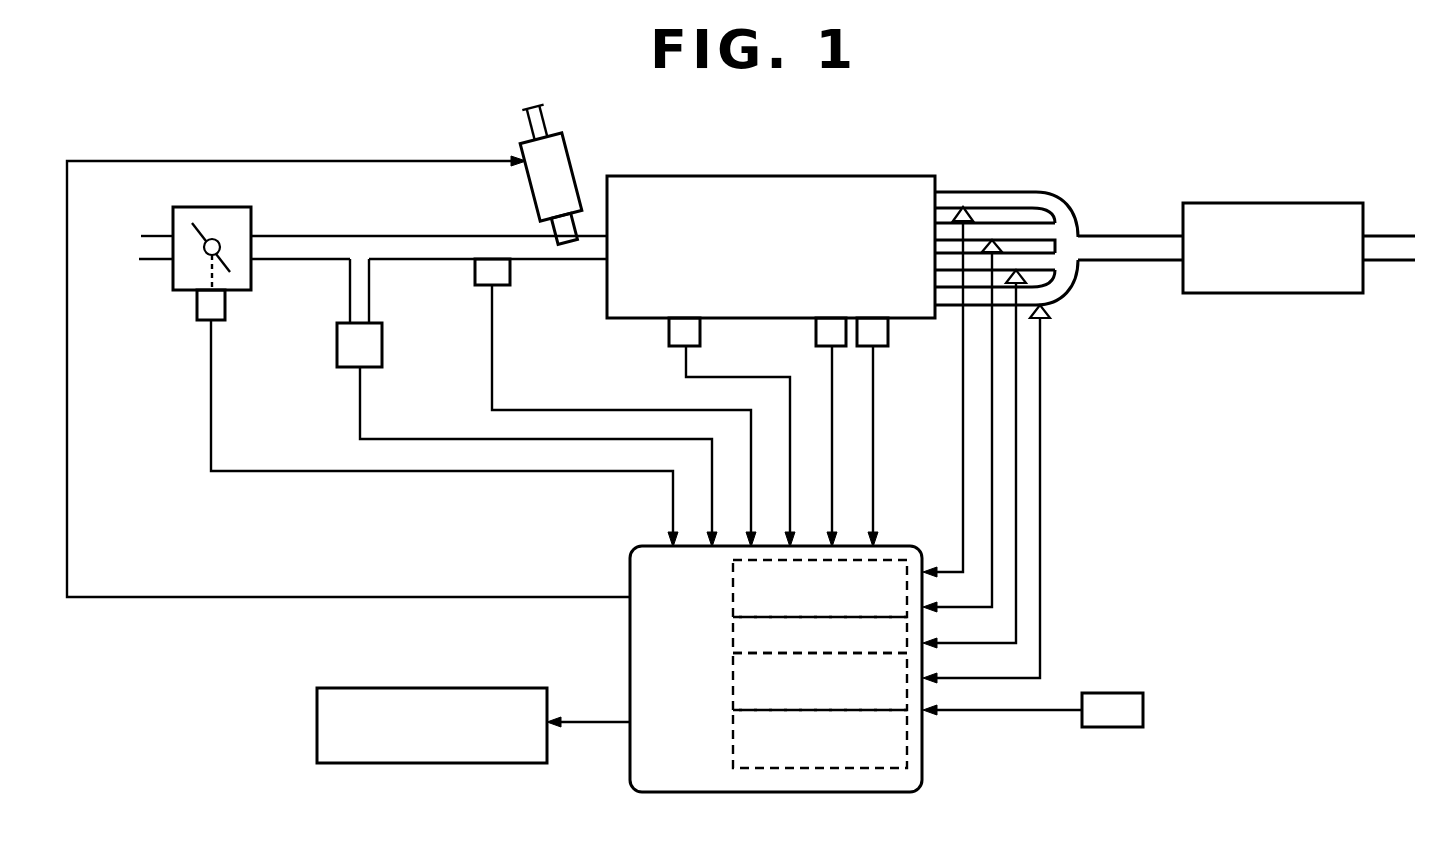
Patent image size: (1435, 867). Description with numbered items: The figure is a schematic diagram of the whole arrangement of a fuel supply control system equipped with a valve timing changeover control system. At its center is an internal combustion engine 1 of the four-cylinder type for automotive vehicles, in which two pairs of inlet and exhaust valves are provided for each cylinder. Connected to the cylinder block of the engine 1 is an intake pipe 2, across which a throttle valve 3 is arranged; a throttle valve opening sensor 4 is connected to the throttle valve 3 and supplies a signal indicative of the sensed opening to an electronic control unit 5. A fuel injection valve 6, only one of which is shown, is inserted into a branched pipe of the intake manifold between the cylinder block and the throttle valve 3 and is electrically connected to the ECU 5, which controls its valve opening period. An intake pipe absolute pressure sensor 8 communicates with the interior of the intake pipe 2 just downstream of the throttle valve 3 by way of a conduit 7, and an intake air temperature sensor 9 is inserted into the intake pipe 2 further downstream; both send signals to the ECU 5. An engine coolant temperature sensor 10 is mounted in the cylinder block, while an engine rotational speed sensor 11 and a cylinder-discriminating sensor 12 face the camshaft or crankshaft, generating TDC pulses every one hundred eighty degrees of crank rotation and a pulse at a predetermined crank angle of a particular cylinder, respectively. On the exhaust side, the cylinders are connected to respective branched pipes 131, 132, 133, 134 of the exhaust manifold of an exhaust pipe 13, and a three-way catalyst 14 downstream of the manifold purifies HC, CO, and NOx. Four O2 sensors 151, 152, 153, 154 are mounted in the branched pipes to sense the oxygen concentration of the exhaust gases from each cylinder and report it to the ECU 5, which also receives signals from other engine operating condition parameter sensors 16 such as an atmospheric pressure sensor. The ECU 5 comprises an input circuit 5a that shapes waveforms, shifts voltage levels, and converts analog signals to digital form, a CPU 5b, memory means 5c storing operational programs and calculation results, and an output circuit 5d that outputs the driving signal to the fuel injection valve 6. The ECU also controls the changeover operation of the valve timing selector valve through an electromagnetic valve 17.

The internal combustion engine 1 is at (830, 176).
The intake pipe 2 is at (396, 236).
The throttle valve 3 is at (246, 222).
The throttle valve opening sensor 4 is at (226, 308).
The electronic control unit 5 is at (735, 669).
The input circuit 5a is at (733, 578).
The central processing unit 5b is at (733, 636).
The memory means 5c is at (733, 681).
The output circuit 5d is at (733, 737).
The fuel injection valve 6 is at (572, 154).
The conduit 7 is at (372, 290).
The intake pipe absolute pressure sensor 8 is at (383, 346).
The intake air temperature sensor 9 is at (502, 272).
The engine coolant temperature sensor 10 is at (668, 331).
The engine rotational speed sensor 11 is at (816, 331).
The cylinder-discriminating sensor 12 is at (888, 330).
The exhaust pipe 13 is at (1157, 236).
The branched pipe of exhaust manifold 131 is at (1020, 197).
The branched pipe of exhaust manifold 132 is at (1027, 233).
The branched pipe of exhaust manifold 133 is at (1032, 263).
The branched pipe of exhaust manifold 134 is at (1050, 302).
The three-way catalyst 14 is at (1290, 203).
The O2 sensor 151 is at (968, 212).
The O2 sensor 152 is at (993, 240).
The O2 sensor 153 is at (1023, 281).
The O2 sensor 154 is at (1046, 314).
The other engine operating condition parameter sensors 16 is at (1145, 710).
The electromagnetic valve 17 is at (417, 688).